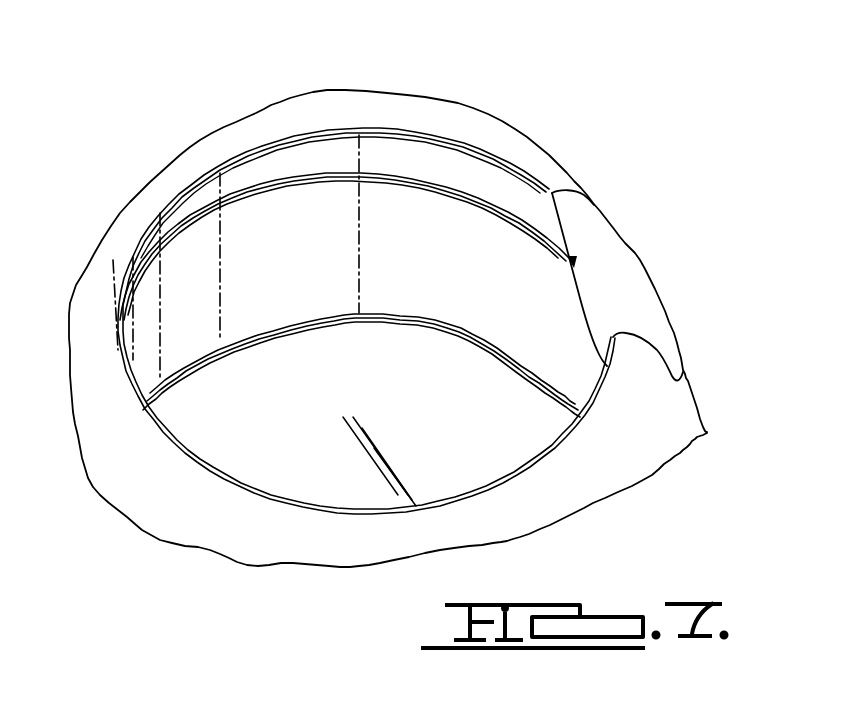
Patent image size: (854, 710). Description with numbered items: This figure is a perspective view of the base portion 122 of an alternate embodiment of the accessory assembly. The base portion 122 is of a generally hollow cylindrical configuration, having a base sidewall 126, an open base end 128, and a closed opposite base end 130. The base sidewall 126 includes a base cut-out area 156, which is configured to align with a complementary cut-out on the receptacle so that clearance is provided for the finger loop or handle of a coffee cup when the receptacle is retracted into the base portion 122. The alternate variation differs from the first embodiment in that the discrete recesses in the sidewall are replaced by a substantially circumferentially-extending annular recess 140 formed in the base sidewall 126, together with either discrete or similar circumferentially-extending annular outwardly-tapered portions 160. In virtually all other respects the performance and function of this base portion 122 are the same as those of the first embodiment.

The base portion 122 is at (404, 122).
The open base end 128 is at (470, 147).
The annular recess 140 is at (453, 187).
The base sidewall 126 is at (237, 175).
The outwardly-tapered portions 160 is at (333, 293).
The closed opposite base end 130 is at (287, 477).
The base cut-out area 156 is at (597, 245).